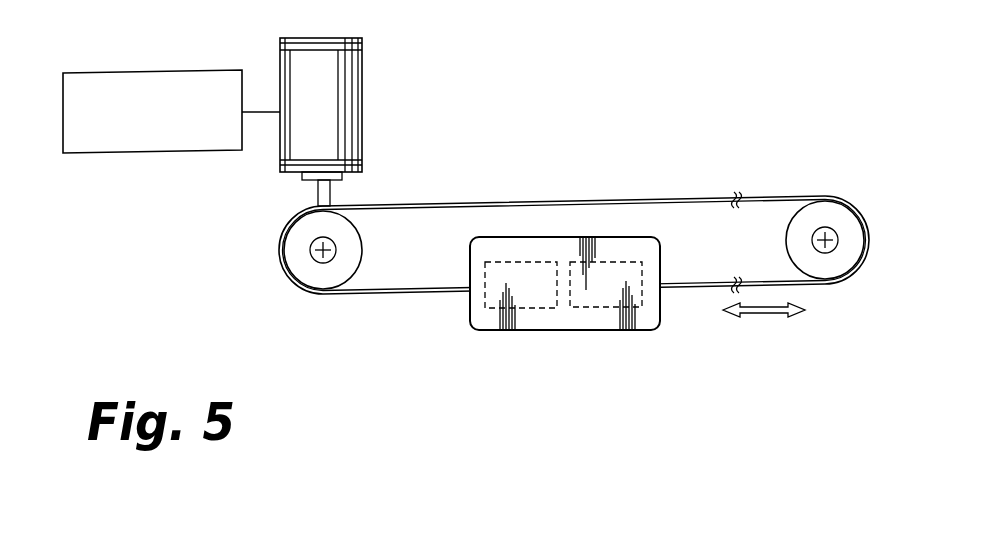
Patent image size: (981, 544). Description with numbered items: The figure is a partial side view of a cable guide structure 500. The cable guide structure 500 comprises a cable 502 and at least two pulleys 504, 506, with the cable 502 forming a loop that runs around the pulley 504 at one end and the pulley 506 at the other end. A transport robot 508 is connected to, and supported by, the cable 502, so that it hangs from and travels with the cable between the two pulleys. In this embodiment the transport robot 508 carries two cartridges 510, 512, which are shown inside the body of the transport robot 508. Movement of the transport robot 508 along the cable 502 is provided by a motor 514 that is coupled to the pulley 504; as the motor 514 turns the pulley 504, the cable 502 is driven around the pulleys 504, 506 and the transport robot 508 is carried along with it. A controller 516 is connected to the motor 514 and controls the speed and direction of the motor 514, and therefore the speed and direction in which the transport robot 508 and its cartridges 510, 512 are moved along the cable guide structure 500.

The cable guide structure 500 is at (667, 126).
The cable 502 is at (382, 294).
The pulley 504 is at (300, 285).
The pulley 506 is at (851, 283).
The transport robot 508 is at (472, 318).
The cartridge 510 is at (537, 296).
The cartridge 512 is at (603, 296).
The motor 514 is at (362, 110).
The controller 516 is at (165, 72).